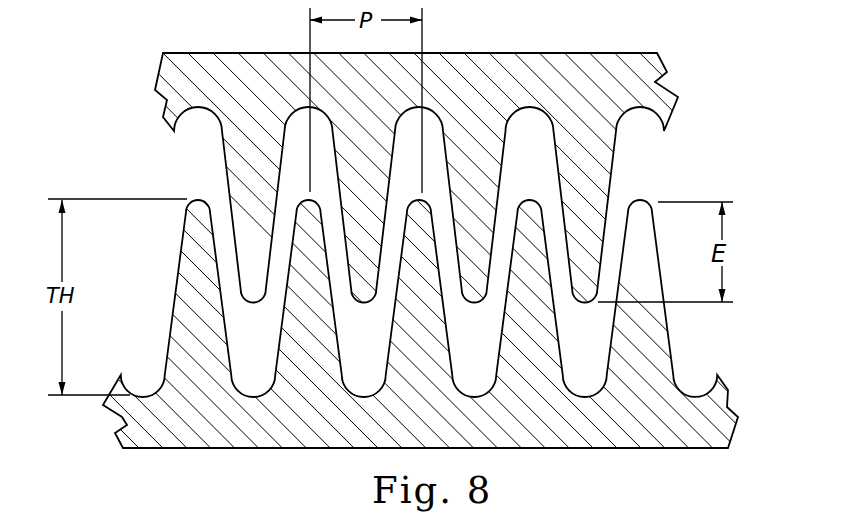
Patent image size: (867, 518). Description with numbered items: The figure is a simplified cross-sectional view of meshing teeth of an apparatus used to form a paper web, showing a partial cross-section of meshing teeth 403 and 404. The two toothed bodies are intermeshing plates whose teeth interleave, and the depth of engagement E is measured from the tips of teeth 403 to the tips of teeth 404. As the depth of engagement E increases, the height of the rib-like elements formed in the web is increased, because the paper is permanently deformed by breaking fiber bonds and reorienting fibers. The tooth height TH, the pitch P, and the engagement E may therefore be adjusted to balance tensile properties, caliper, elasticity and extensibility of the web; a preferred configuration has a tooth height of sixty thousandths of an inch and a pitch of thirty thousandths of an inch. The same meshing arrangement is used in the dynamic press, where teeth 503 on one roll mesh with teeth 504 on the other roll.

The teeth 403 is at (587, 207).
The teeth 404 is at (638, 213).
The teeth 503 is at (255, 245).
The teeth 504 is at (197, 223).